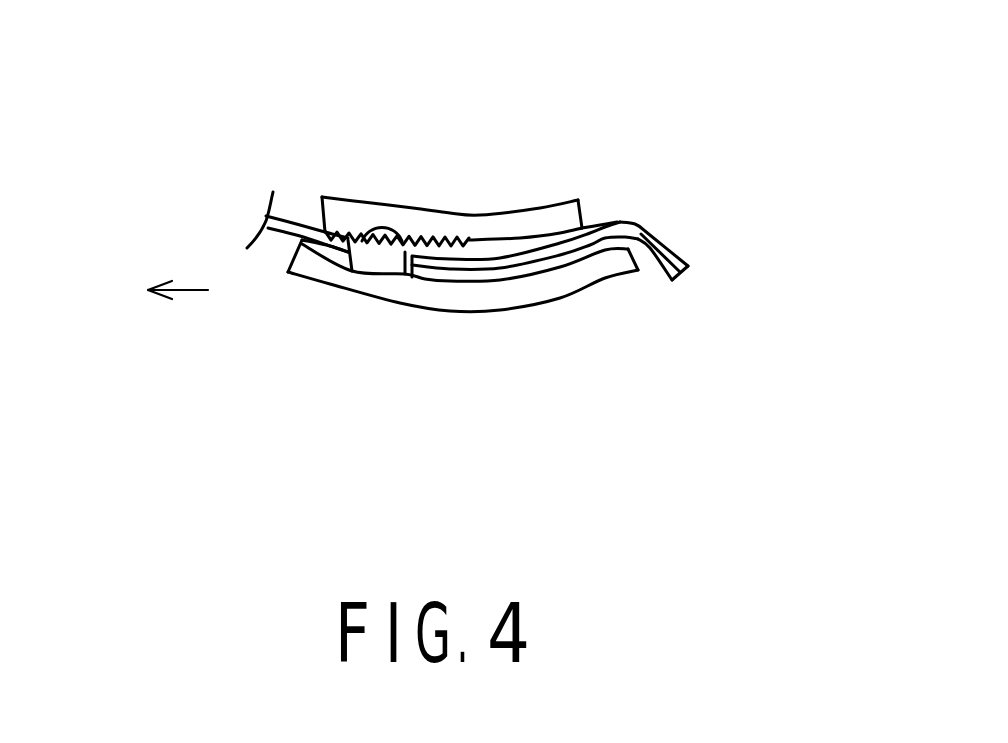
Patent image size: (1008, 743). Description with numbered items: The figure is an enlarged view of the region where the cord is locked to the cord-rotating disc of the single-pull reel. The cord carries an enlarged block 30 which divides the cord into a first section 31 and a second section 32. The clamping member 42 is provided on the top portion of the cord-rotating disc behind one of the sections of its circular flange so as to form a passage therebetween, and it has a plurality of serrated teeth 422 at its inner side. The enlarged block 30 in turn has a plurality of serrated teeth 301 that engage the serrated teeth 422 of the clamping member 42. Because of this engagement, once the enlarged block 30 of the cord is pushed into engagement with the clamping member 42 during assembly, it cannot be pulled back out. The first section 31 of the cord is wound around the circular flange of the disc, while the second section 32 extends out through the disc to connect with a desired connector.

The enlarged block 30 is at (378, 253).
The serrated teeth 301 is at (395, 273).
The first section 31 is at (296, 246).
The second section 32 is at (640, 228).
The clamping member 42 is at (430, 213).
The serrated teeth 422 is at (457, 238).